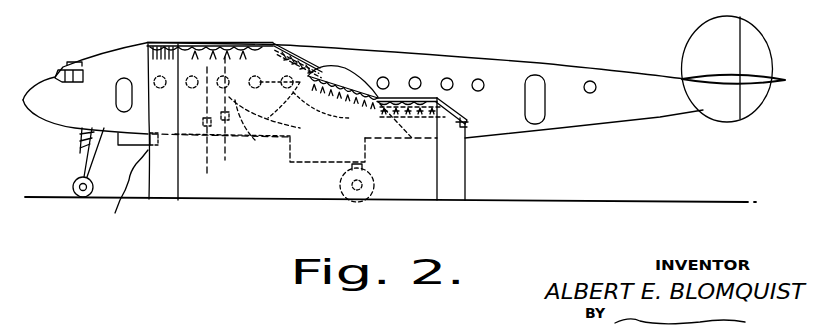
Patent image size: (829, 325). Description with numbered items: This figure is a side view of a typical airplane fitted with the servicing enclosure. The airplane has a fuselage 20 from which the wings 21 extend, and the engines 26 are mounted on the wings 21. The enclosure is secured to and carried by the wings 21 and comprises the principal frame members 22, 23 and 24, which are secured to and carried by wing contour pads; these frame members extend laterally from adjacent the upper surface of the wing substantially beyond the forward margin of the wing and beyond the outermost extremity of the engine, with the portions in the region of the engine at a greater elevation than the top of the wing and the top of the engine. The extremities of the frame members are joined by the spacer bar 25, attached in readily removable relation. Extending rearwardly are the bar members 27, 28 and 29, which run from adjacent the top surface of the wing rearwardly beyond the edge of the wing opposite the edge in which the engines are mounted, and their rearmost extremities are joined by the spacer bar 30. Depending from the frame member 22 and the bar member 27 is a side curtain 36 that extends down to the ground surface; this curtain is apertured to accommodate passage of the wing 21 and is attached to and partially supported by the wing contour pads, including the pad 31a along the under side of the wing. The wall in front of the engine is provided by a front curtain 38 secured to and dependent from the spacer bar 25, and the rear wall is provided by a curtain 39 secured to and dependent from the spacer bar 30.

The fuselage 20 is at (607, 77).
The wings 21 is at (338, 78).
The frame member 22 is at (200, 42).
The frame member 23 is at (268, 45).
The frame member 24 is at (295, 46).
The spacer bar 25 is at (147, 42).
The engines 26 is at (248, 140).
The bar member 27 is at (398, 97).
The bar member 28 is at (428, 97).
The bar member 29 is at (467, 128).
The spacer bar 30 is at (451, 104).
The wing contour pad 31a is at (355, 104).
The curtain 36 is at (246, 178).
The front curtain 38 is at (130, 192).
The curtain 39 is at (457, 163).